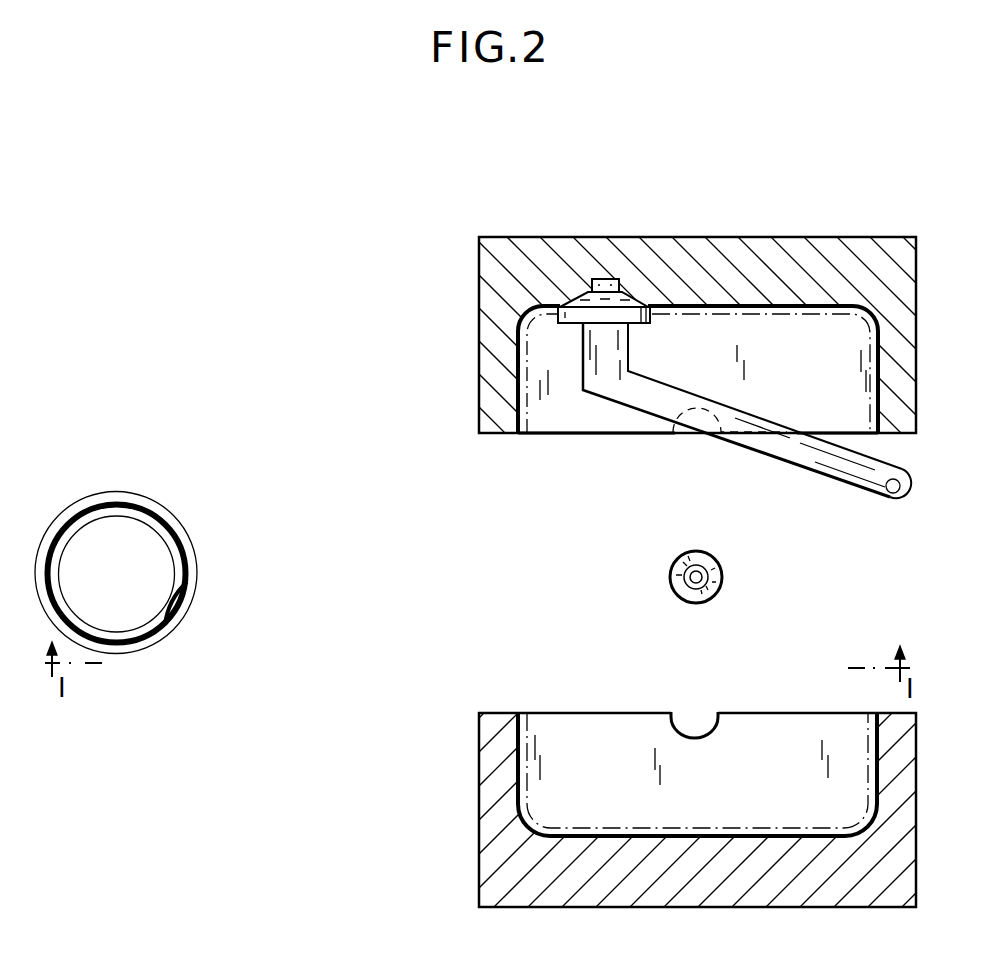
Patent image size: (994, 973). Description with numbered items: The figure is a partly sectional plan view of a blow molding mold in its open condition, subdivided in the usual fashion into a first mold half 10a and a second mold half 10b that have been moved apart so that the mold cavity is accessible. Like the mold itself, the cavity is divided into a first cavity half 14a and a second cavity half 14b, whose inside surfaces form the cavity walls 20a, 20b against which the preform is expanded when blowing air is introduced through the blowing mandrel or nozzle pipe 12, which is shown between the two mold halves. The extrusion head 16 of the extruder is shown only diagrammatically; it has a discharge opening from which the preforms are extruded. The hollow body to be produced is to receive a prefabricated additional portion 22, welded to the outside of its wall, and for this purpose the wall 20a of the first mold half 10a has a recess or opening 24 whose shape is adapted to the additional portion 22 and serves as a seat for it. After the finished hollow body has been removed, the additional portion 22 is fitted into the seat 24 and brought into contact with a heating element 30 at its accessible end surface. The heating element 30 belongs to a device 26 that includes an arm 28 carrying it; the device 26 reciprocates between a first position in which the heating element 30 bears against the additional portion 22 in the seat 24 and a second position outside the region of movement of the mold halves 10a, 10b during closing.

The first mold half 10a is at (490, 283).
The second mold half 10b is at (488, 820).
The blowing mandrel or nozzle pipe 12 is at (681, 593).
The first cavity half 14a is at (530, 380).
The second cavity half 14b is at (566, 742).
The extrusion head 16 is at (167, 518).
The wall of first mold cavity half 20a is at (768, 316).
The wall of second mold cavity half 20b is at (785, 838).
The additional portion 22 is at (583, 290).
The recess or seat 24 is at (632, 292).
The heating device 26 is at (610, 416).
The arm 28 is at (768, 448).
The heating element 30 is at (651, 320).